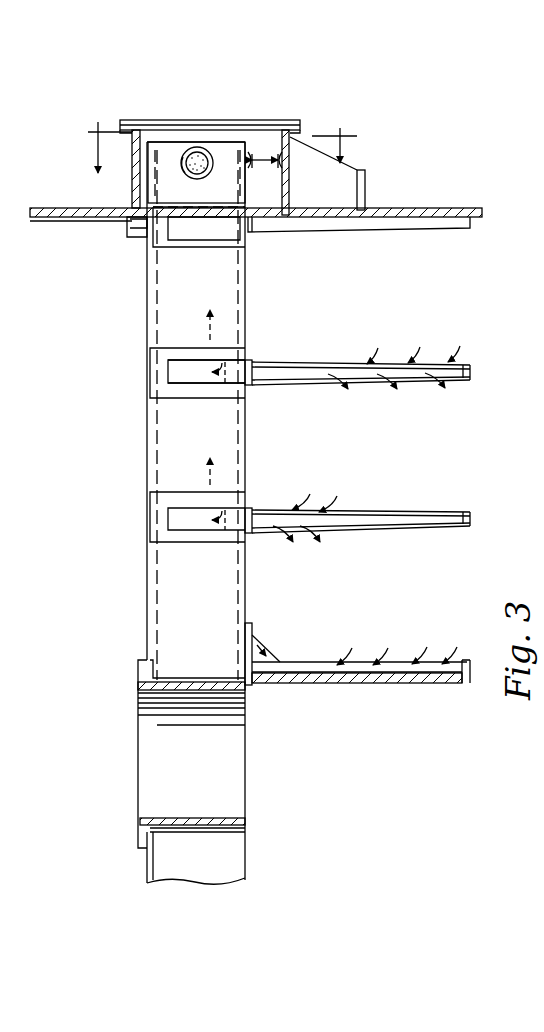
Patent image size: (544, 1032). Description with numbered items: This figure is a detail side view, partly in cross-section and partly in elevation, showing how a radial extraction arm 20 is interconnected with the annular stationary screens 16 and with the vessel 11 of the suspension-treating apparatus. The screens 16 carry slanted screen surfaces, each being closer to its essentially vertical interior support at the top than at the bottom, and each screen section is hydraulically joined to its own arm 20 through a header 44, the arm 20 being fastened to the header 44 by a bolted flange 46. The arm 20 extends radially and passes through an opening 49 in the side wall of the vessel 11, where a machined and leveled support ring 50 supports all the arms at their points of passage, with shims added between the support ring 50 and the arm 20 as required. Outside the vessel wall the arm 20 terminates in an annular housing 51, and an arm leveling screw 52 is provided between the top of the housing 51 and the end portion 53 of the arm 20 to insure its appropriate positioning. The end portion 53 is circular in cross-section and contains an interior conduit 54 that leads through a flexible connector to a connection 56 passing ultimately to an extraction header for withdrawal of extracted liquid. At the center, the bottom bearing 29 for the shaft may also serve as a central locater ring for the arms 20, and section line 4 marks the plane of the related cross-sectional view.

The section line 4- 4 is at (215, 166).
The vessel 11 is at (398, 208).
The annular stationary screen 16 is at (334, 392).
The radial extraction arm 20 is at (163, 443).
The bottom bearing 29 is at (197, 690).
The header 44 is at (200, 378).
The bolted flange 46 is at (150, 397).
The opening 49 is at (140, 205).
The support ring 50 is at (135, 220).
The annular housing 51 is at (205, 120).
The arm leveling screw 52 is at (265, 163).
The end portion 53 is at (240, 140).
The interior conduit 54 is at (213, 155).
The connection 56 is at (183, 157).